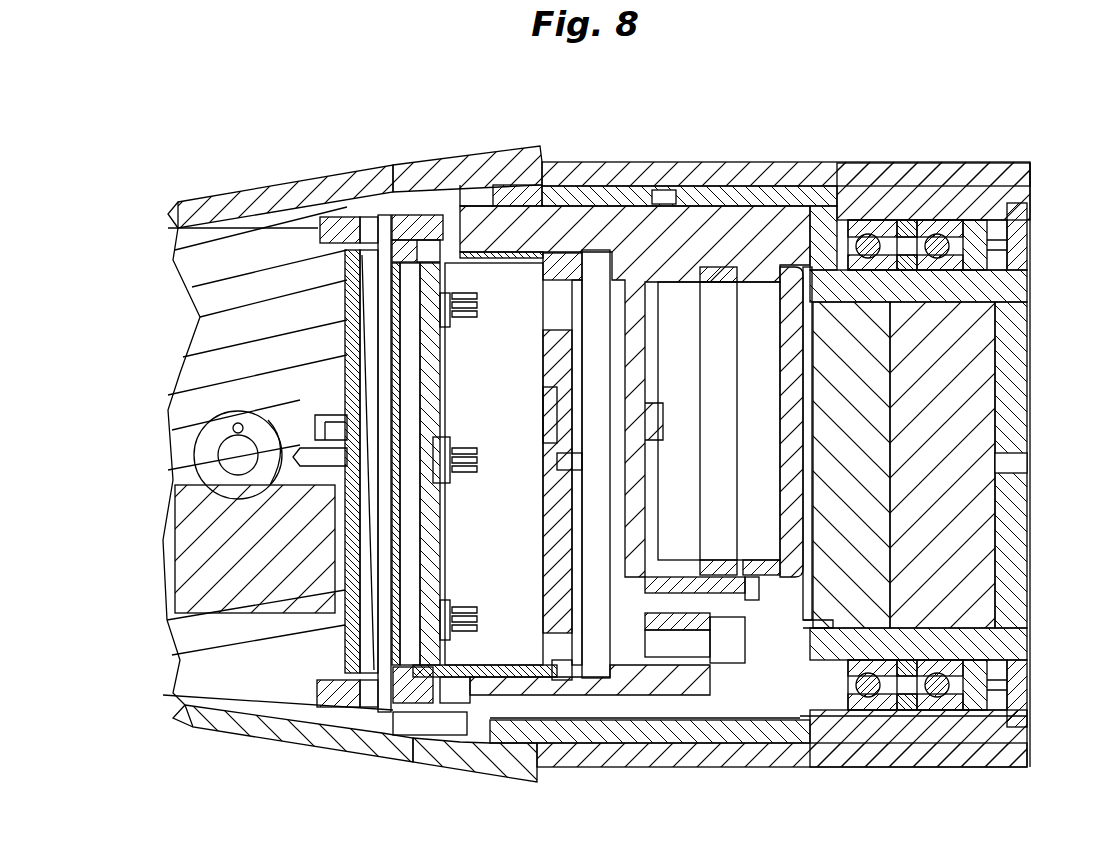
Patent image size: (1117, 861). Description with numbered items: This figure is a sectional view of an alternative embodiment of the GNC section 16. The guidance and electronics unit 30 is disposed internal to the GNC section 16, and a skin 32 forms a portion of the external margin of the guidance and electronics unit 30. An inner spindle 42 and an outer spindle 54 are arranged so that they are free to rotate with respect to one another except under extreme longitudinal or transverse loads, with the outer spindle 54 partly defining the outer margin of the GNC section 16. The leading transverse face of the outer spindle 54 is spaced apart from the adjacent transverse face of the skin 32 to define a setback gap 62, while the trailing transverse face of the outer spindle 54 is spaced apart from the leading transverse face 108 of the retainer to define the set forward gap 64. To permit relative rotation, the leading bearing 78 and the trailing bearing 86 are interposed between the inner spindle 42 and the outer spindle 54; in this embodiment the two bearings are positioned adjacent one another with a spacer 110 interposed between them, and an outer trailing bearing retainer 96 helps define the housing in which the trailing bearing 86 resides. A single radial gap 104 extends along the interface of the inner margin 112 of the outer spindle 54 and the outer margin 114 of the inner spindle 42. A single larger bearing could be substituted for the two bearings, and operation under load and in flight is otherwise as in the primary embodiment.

The GNC section 16 is at (497, 68).
The guidance and electronics unit 30 is at (390, 188).
The skin 32 is at (403, 158).
The inner spindle 42 is at (722, 190).
The outer spindle 54 is at (470, 152).
The setback gap 62 is at (495, 353).
The set forward gap 64 is at (1005, 225).
The leading bearing 78 is at (868, 234).
The trailing bearing 86 is at (940, 220).
The outer trailing bearing retainer 96 is at (970, 222).
The radial gap 104 is at (592, 165).
The leading transverse face 108 is at (1008, 196).
The spacer 110 is at (905, 218).
The inner margin 112 is at (707, 185).
The outer margin 114 is at (675, 205).